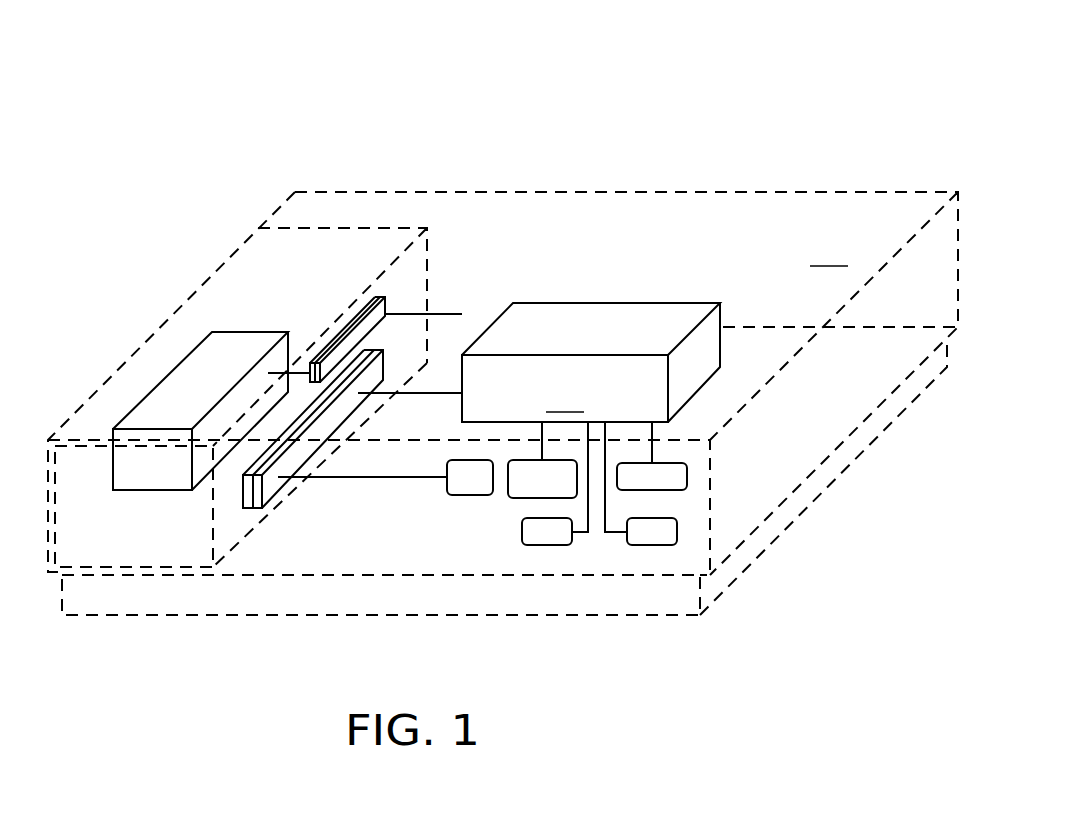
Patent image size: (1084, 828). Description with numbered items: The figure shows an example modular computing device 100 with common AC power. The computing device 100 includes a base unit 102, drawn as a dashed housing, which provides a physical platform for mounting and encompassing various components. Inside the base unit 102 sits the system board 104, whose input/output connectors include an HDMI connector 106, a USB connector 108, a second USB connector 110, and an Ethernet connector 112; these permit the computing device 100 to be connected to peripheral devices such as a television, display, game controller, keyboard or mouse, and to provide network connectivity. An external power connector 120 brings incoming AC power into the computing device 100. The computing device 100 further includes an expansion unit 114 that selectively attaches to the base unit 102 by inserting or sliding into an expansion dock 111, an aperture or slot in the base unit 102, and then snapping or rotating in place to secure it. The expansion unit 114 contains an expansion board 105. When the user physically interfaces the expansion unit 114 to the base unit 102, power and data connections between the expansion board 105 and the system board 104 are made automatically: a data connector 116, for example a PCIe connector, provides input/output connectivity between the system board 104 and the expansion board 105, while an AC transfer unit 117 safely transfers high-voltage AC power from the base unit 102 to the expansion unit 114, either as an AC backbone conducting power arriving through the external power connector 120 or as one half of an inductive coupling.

The modular computing device 100 is at (250, 117).
The base unit 102 is at (503, 403).
The system board 104 is at (591, 417).
The expansion board 105 is at (153, 490).
The HDMI connector 106 is at (512, 498).
The USB connector 108 is at (549, 546).
The USB connector 110 is at (677, 532).
The expansion dock 111 is at (160, 572).
The Ethernet connector 112 is at (687, 477).
The expansion unit 114 is at (236, 486).
The data connector 116 is at (347, 316).
The AC transfer unit 117 is at (250, 508).
The external power connector 120 is at (450, 497).